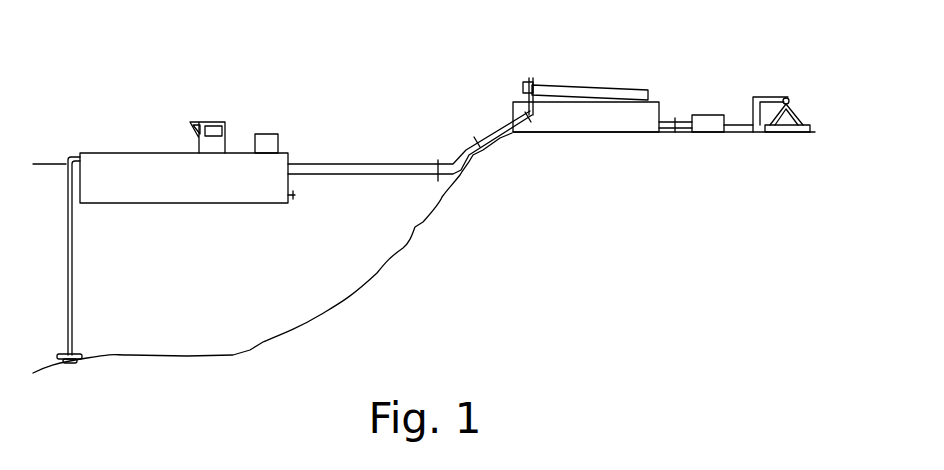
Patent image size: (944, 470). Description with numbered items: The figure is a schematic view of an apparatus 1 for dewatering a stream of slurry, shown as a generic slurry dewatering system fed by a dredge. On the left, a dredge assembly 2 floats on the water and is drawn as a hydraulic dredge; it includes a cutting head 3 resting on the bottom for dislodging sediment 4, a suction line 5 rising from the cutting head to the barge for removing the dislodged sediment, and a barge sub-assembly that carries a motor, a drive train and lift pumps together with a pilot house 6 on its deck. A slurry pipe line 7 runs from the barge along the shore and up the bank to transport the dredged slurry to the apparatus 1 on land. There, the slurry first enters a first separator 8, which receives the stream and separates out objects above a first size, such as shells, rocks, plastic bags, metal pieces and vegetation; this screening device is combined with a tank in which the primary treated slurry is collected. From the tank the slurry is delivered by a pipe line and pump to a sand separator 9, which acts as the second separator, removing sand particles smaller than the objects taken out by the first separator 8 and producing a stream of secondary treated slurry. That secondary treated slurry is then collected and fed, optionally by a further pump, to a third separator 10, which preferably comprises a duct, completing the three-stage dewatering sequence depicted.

The apparatus 1 is at (627, 146).
The dredge assembly 2 is at (125, 139).
The cutting head 3 is at (78, 355).
The sediment 4 is at (143, 353).
The suction line 5 is at (70, 287).
The pilot house 6 is at (208, 122).
The slurry pipe line 7 is at (345, 170).
The first separator 8 is at (587, 85).
The sand separator 9 is at (705, 115).
The third separator 10 is at (787, 98).